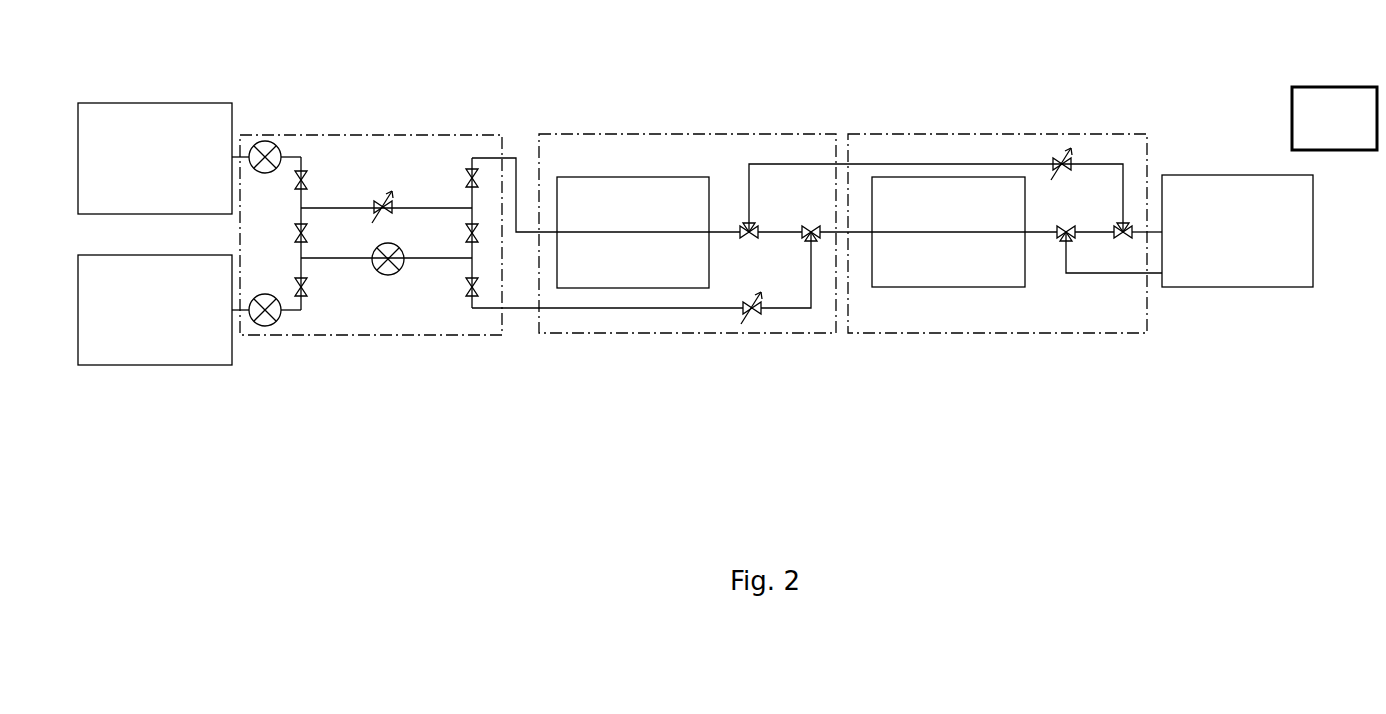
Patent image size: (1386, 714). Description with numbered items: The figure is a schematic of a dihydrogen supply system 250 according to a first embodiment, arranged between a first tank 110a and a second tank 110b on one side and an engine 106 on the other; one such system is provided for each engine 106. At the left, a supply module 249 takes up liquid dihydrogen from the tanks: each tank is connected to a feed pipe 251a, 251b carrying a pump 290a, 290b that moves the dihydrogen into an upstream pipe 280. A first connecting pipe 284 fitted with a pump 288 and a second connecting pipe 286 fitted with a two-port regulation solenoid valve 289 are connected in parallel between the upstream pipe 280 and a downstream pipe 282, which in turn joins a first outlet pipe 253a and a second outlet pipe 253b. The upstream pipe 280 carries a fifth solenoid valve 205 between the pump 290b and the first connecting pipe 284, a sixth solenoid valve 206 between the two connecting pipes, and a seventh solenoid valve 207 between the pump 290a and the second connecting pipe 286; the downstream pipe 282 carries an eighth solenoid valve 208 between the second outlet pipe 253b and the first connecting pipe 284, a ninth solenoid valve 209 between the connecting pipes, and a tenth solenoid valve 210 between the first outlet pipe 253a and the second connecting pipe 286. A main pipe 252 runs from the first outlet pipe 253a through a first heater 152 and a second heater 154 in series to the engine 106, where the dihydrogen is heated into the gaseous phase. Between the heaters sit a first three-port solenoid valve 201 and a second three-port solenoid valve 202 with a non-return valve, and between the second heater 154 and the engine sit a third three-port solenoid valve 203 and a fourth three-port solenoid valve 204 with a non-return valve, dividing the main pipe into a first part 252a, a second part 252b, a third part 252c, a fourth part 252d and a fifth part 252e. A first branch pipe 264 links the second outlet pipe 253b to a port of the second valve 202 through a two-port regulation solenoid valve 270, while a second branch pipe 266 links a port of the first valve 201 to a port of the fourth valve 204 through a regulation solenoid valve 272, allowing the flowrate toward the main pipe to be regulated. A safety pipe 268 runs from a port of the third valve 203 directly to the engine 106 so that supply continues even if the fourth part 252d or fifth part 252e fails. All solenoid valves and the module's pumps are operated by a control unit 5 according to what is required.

The control unit 5 is at (1335, 150).
The engine 106 is at (1237, 231).
The first tank 110a is at (98, 103).
The second tank 110b is at (78, 353).
The first heater 152 is at (633, 232).
The second heater 154 is at (953, 232).
The first three-port solenoid valve 201 is at (745, 238).
The second three-port solenoid valve 202 is at (812, 242).
The third three-port solenoid valve 203 is at (1060, 240).
The fourth three-port solenoid valve 204 is at (1126, 240).
The fifth two-port solenoid valve 205 is at (298, 285).
The sixth two-port solenoid valve 206 is at (298, 232).
The seventh two-port solenoid valve 207 is at (300, 178).
The eighth two-port solenoid valve 208 is at (463, 288).
The ninth two-port solenoid valve 209 is at (465, 233).
The tenth two-port solenoid valve 210 is at (463, 181).
The supply module 249 is at (363, 99).
The supply system 250 is at (1165, 98).
The feed pipe 251a is at (247, 155).
The feed pipe 251b is at (250, 318).
The main pipe 252 is at (690, 232).
The first part of main pipe 252a is at (648, 232).
The second part of main pipe 252b is at (781, 232).
The third part of main pipe 252c is at (967, 232).
The fourth part of main pipe 252d is at (1087, 233).
The fifth part of main pipe 252e is at (1149, 226).
The first outlet pipe 253a is at (474, 158).
The second outlet pipe 253b is at (482, 310).
The first branch pipe 264 is at (582, 310).
The second branch pipe 266 is at (1012, 163).
The safety pipe 268 is at (1157, 273).
The two-port regulation solenoid valve 270 is at (757, 314).
The two-port regulation solenoid valve 272 is at (1073, 158).
The upstream pipe 280 is at (303, 306).
The downstream pipe 282 is at (478, 193).
The first connecting pipe 284 is at (328, 260).
The second connecting pipe 286 is at (338, 207).
The pump 288 is at (378, 272).
The two-port regulation solenoid valve 289 is at (376, 202).
The pump 290a is at (303, 118).
The pump 290b is at (272, 323).